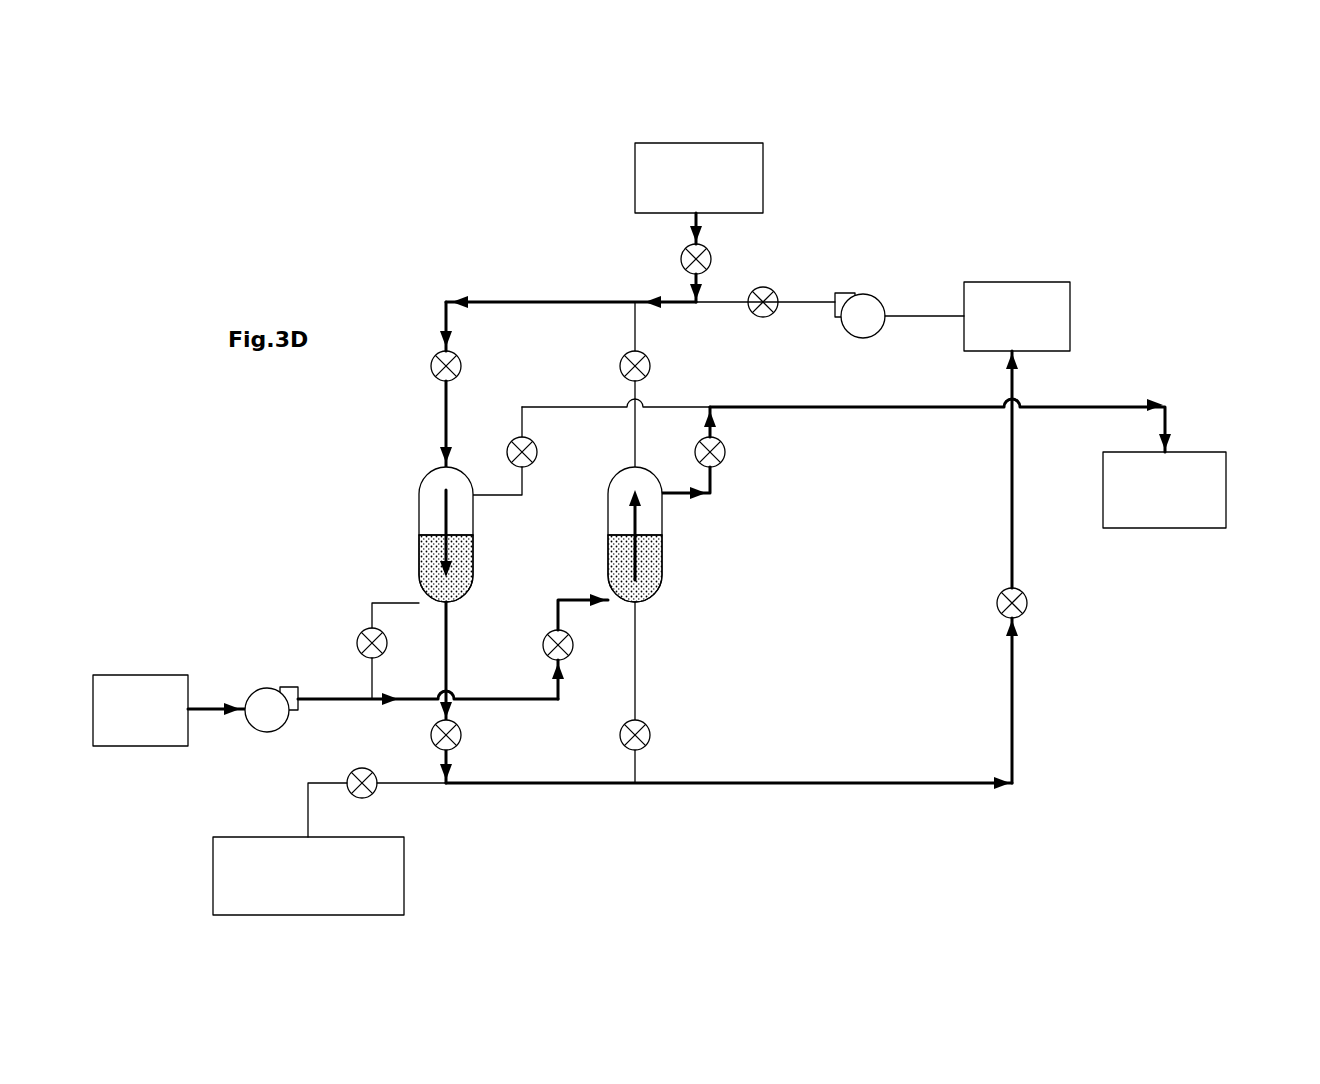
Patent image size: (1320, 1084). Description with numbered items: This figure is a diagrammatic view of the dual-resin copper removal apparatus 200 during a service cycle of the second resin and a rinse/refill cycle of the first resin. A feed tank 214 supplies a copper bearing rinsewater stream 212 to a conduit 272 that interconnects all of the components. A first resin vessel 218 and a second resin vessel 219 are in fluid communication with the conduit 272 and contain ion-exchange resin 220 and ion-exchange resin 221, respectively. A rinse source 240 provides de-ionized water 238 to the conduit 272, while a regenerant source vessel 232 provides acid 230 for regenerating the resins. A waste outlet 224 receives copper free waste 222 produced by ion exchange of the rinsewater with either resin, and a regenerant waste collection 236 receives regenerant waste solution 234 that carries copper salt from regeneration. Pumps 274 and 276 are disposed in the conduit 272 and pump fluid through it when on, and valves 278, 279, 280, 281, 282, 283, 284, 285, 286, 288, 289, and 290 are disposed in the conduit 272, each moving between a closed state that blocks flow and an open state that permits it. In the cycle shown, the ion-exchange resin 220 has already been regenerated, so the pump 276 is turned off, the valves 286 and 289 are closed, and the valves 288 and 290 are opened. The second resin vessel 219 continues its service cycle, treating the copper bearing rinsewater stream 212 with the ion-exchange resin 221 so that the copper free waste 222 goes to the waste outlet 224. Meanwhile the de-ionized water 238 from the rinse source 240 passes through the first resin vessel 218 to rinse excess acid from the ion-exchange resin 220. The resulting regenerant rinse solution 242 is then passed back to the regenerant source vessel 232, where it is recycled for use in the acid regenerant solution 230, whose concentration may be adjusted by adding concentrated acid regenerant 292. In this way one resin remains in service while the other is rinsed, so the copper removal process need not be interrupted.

The apparatus 200 is at (1042, 226).
The copper bearing rinsewater stream 212 is at (204, 690).
The feed tank 214 is at (127, 675).
The first resin vessel 218 is at (486, 568).
The second resin vessel 219 is at (676, 561).
The ion-exchange resin 220 is at (448, 534).
The ion-exchange resin 221 is at (635, 534).
The copper free waste 222 is at (1172, 384).
The waste outlet 224 is at (1170, 529).
The acid 230 is at (1040, 290).
The regenerant source vessel 232 is at (1060, 296).
The regenerant waste solution 234 is at (388, 874).
The regenerant waste collection 236 is at (360, 875).
The de-ionized water 238 is at (681, 216).
The rinse source 240 is at (764, 186).
The regenerant rinse solution 242 is at (1040, 727).
The conduit 272 is at (406, 266).
The pump 274 is at (266, 725).
The pump 276 is at (863, 326).
The valve 278 is at (359, 634).
The valve 279 is at (545, 640).
The valve 280 is at (512, 442).
The valve 281 is at (726, 453).
The valve 282 is at (431, 366).
The valve 283 is at (620, 366).
The valve 284 is at (461, 736).
The valve 285 is at (648, 728).
The valve 286 is at (362, 799).
The valve 288 is at (712, 258).
The valve 289 is at (768, 313).
The valve 290 is at (1028, 604).
The concentrated acid regenerant 292 is at (1100, 345).